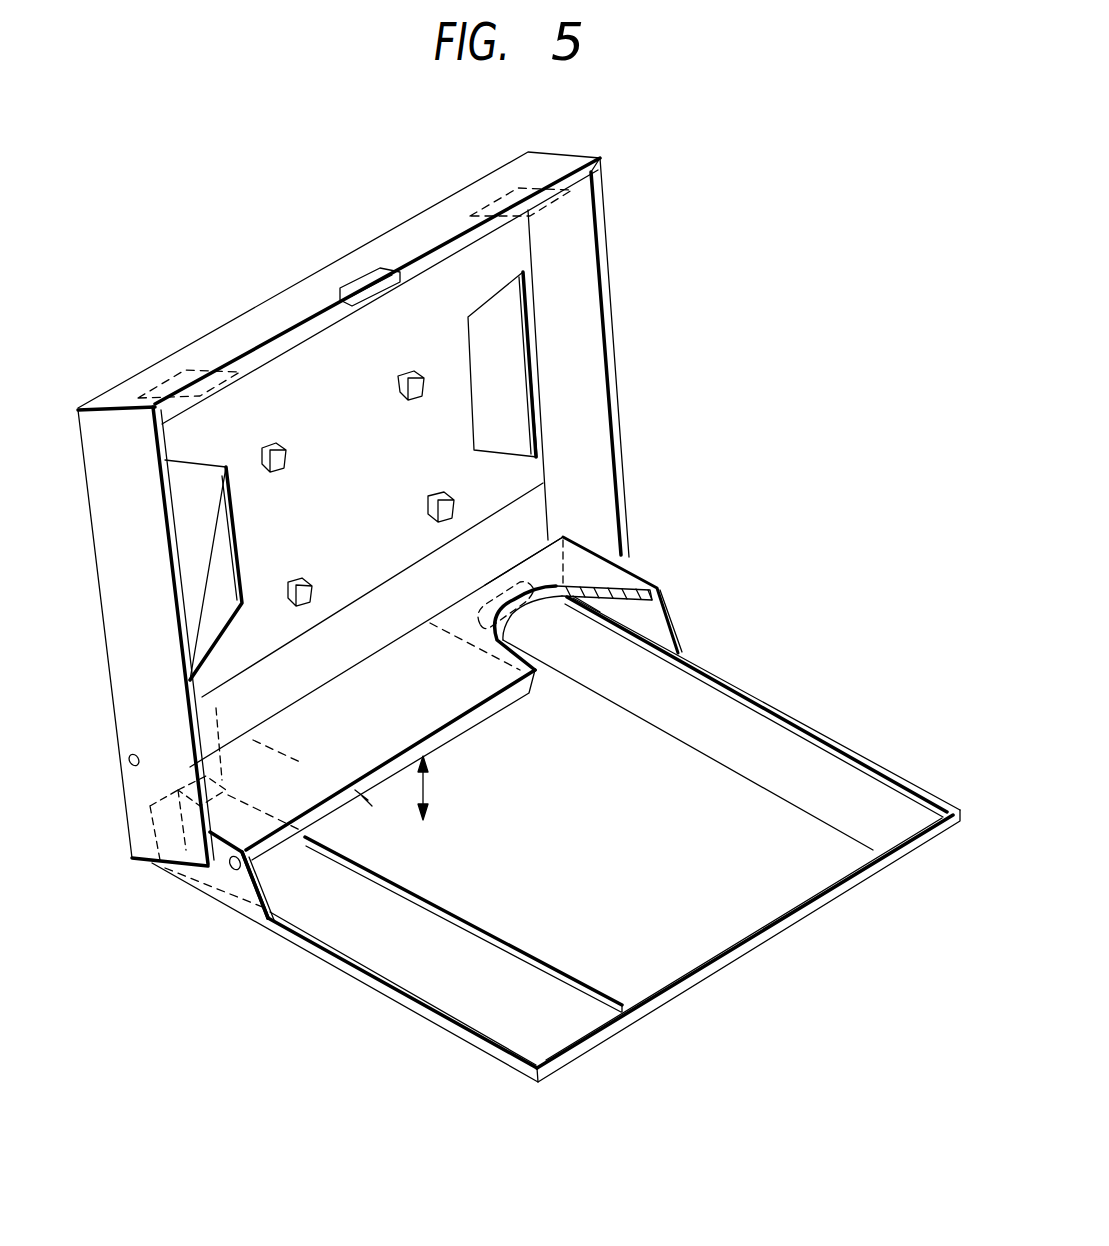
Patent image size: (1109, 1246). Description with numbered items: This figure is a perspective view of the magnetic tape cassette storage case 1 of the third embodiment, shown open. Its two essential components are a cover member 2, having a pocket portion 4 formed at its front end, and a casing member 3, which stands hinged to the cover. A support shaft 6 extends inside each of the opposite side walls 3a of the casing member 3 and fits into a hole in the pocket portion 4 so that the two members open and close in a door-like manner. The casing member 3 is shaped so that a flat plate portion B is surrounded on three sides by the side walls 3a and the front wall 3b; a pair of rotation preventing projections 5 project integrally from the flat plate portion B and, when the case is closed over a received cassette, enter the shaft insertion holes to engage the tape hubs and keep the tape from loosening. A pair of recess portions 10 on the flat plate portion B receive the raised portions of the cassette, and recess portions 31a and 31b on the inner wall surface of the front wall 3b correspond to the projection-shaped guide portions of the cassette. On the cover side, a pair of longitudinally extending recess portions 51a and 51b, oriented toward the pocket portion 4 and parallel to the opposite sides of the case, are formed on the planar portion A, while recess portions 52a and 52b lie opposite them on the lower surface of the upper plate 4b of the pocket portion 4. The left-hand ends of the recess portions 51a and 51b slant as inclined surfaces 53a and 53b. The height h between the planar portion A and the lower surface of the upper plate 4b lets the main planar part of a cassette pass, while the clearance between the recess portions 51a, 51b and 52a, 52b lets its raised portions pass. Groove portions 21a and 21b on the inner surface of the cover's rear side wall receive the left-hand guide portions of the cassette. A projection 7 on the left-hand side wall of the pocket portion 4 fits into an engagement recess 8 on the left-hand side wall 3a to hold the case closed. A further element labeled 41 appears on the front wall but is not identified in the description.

The magnetic tape cassette storage case 1 is at (692, 474).
The cover member 2 is at (818, 726).
The casing member 3 is at (128, 372).
The side walls of casing member 3a is at (596, 398).
The front wall of casing member 3b is at (266, 320).
The recess portion 31a is at (178, 376).
The recess portion 31b is at (474, 210).
The tab 41 is at (368, 280).
The flat plate portion of casing member B is at (508, 246).
The recess portions 10 is at (193, 482).
The rotation preventing projections 5 is at (276, 472).
The pocket portion 4 is at (458, 743).
The upper plate of pocket portion 4b is at (368, 694).
The height h is at (431, 788).
The groove portion 21a is at (203, 777).
The groove portion 21b is at (486, 600).
The longitudinally extending recess portion 51a is at (352, 944).
The longitudinally extending recess portion 51b is at (698, 692).
The recess portion 52a is at (366, 800).
The recess portion 52b is at (640, 592).
The inclined surface 53a is at (264, 866).
The inclined surface 53b is at (556, 650).
The support shaft 6 is at (150, 850).
The projection 7 is at (232, 872).
The engagement recess 8 is at (128, 762).
The planar portion of cover member A is at (716, 942).